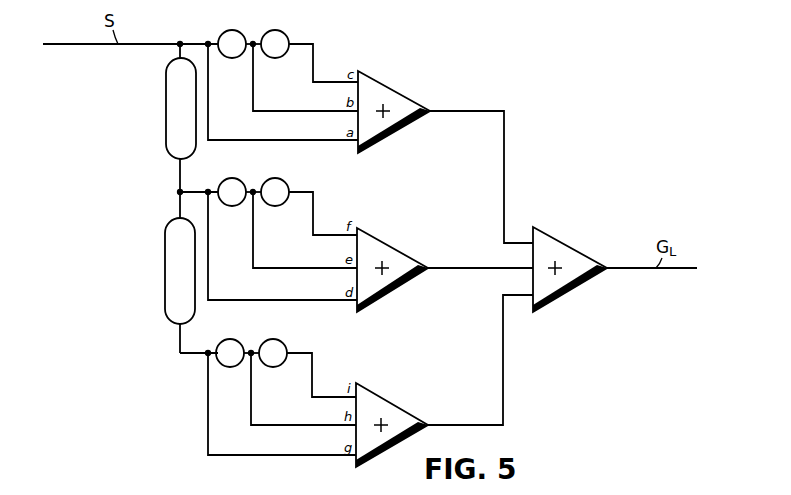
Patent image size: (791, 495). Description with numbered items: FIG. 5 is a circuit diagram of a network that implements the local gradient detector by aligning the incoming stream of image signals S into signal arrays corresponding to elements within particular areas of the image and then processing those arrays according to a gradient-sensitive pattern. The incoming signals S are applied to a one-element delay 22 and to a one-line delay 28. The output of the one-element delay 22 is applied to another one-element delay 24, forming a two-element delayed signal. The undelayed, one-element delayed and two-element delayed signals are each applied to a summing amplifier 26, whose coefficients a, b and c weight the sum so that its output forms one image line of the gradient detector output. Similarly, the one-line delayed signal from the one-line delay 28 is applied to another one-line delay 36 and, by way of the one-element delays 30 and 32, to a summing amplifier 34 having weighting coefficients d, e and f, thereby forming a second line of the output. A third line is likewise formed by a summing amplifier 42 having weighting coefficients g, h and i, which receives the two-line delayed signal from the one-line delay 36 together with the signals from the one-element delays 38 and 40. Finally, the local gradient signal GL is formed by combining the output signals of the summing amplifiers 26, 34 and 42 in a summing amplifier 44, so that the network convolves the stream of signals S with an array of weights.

The one-element delay 22 is at (232, 31).
The one-element delay 24 is at (279, 31).
The summing amplifier 26 is at (400, 90).
The one-line delay 28 is at (166, 125).
The one-element delay 30 is at (228, 179).
The one-element delay 32 is at (279, 179).
The summing amplifier 34 is at (392, 248).
The one-line delay 36 is at (165, 258).
The one-element delay 38 is at (226, 340).
The one-element delay 40 is at (277, 340).
The summing amplifier 42 is at (398, 406).
The summing amplifier 44 is at (578, 250).